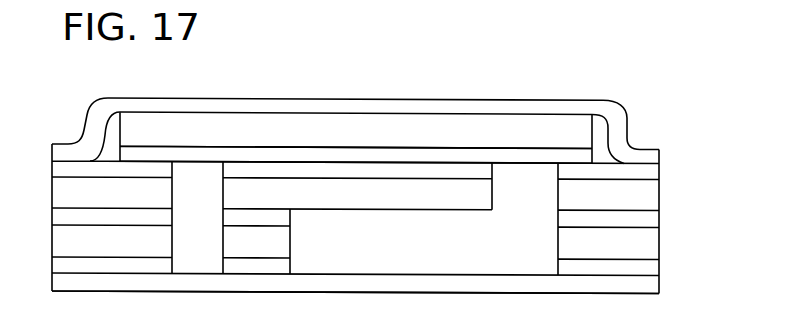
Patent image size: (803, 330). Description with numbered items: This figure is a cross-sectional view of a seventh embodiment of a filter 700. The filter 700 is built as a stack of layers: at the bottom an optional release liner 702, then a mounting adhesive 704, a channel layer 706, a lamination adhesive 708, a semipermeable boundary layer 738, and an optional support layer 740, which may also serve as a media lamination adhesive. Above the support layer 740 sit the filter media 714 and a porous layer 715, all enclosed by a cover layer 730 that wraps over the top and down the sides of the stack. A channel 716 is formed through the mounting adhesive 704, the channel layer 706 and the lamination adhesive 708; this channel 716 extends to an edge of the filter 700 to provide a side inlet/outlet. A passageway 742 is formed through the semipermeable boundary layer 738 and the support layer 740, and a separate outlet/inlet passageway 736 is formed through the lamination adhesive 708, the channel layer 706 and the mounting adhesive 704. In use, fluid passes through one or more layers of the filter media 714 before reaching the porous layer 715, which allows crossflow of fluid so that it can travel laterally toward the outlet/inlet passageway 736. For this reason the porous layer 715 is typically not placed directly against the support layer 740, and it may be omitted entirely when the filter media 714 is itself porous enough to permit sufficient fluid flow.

The filter 700 is at (404, 90).
The release liner 702 is at (659, 285).
The mounting adhesive 704 is at (659, 265).
The channel layer 706 is at (659, 243).
The lamination adhesive 708 is at (659, 221).
The filter media 714 is at (592, 155).
The porous layer 715 is at (592, 129).
The channel 716 is at (330, 232).
The cover layer 730 is at (581, 99).
The outlet/inlet passageway 736 is at (199, 198).
The semipermeable boundary layer 738 is at (659, 198).
The support layer 740 is at (659, 173).
The passageway 742 is at (525, 177).